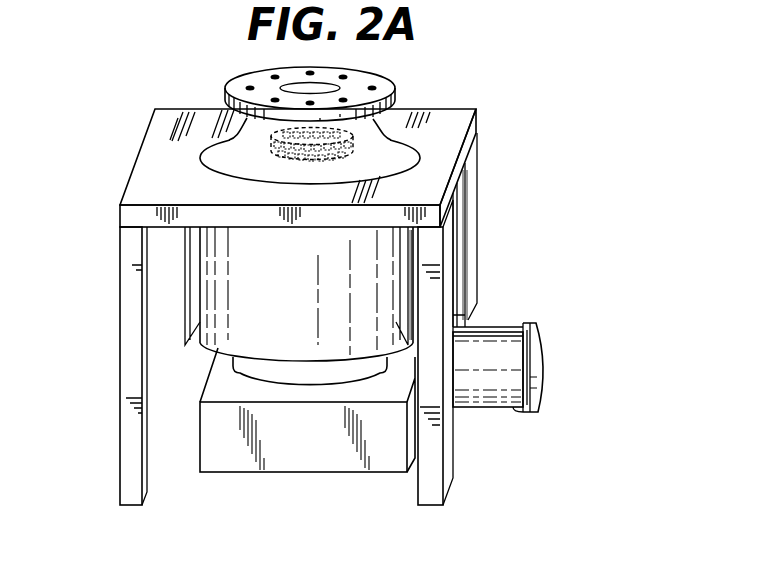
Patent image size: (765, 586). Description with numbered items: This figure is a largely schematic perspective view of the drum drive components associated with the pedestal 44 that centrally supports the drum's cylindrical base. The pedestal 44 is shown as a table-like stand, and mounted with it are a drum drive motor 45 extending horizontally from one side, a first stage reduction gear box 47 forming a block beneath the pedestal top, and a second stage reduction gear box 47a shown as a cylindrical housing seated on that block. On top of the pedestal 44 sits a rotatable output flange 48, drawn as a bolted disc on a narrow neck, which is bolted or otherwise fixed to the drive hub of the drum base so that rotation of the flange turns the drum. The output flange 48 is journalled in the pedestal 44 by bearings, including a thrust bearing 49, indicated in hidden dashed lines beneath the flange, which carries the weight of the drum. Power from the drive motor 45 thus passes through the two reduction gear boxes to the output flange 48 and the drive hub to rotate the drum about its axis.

The pedestal 44 is at (118, 339).
The drum drive motor 45 is at (556, 392).
The first stage reduction gear box 47 is at (321, 480).
The second stage reduction gear box 47a is at (258, 279).
The rotatable output flange 48 is at (405, 91).
The thrust bearing 49 is at (258, 158).